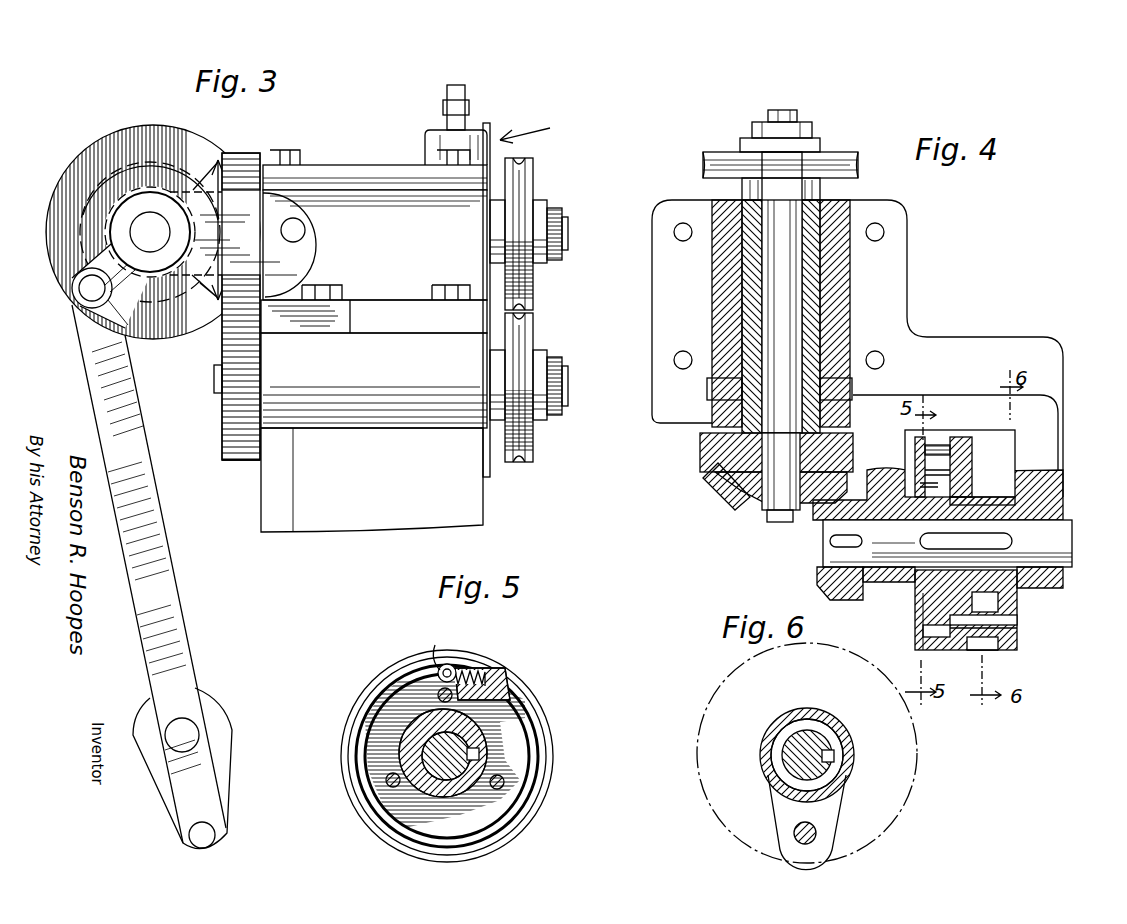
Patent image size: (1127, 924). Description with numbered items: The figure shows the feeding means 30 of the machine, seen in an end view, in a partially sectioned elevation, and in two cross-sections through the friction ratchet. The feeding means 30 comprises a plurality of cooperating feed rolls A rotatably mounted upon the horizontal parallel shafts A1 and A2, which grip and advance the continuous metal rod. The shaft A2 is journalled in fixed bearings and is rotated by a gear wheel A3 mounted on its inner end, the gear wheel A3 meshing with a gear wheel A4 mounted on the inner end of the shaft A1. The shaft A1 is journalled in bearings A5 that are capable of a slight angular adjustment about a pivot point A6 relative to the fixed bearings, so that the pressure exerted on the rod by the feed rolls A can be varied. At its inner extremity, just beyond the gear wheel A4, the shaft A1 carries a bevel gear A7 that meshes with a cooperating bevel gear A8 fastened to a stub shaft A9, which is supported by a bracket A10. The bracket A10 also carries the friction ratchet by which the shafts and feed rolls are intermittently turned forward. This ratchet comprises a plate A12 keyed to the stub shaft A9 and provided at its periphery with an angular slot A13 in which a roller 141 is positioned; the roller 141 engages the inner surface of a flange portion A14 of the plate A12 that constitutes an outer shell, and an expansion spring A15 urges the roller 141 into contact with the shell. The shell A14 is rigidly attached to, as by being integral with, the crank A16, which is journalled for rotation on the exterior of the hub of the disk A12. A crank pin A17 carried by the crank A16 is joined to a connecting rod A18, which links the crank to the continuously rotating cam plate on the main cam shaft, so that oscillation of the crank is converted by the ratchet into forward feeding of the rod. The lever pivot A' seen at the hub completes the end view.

In FIG. 3, the feeding means 30 is at (540, 128).
In FIG. 4, the feeding means 30 is at (928, 273).
In FIG. 3, the feed rolls A is at (545, 310).
In FIG. 3, the shaft A1 is at (568, 236).
In FIG. 3, the shaft A2 is at (568, 392).
In FIG. 3, the gear wheel A3 is at (228, 462).
In FIG. 3, the gear wheel A4 is at (246, 157).
In FIG. 4, the gear wheel A4 is at (722, 450).
In FIG. 3, the bearings A5 is at (342, 172).
In FIG. 3, the pivot point A6 is at (305, 243).
In FIG. 3, the bevel gear A7 is at (218, 158).
In FIG. 4, the bevel gear A7 is at (722, 496).
In FIG. 3, the bevel gear A8 is at (100, 160).
In FIG. 4, the bevel gear A8 is at (867, 570).
In FIG. 3, the stub shaft A9 is at (130, 238).
In FIG. 4, the stub shaft A9 is at (1040, 577).
In FIG. 5, the stub shaft A9 is at (465, 770).
In FIG. 6, the stub shaft A9 is at (795, 760).
In FIG. 3, the bracket A10 is at (283, 280).
In FIG. 4, the plate A12 is at (965, 655).
In FIG. 5, the plate A12 is at (518, 735).
In FIG. 5, the angular slot A13 is at (440, 670).
In FIG. 4, the flange portion A14 is at (942, 440).
In FIG. 5, the flange portion A14 is at (392, 668).
In FIG. 5, the expansion spring A15 is at (483, 680).
In FIG. 4, the crank A16 is at (994, 645).
In FIG. 4, the crank pin A17 is at (1017, 622).
In FIG. 6, the crank pin A17 is at (812, 835).
In FIG. 3, the connecting rod A18 is at (135, 443).
In FIG. 3, the crank pin A' is at (119, 301).
In FIG. 5, the roller 141 is at (450, 666).